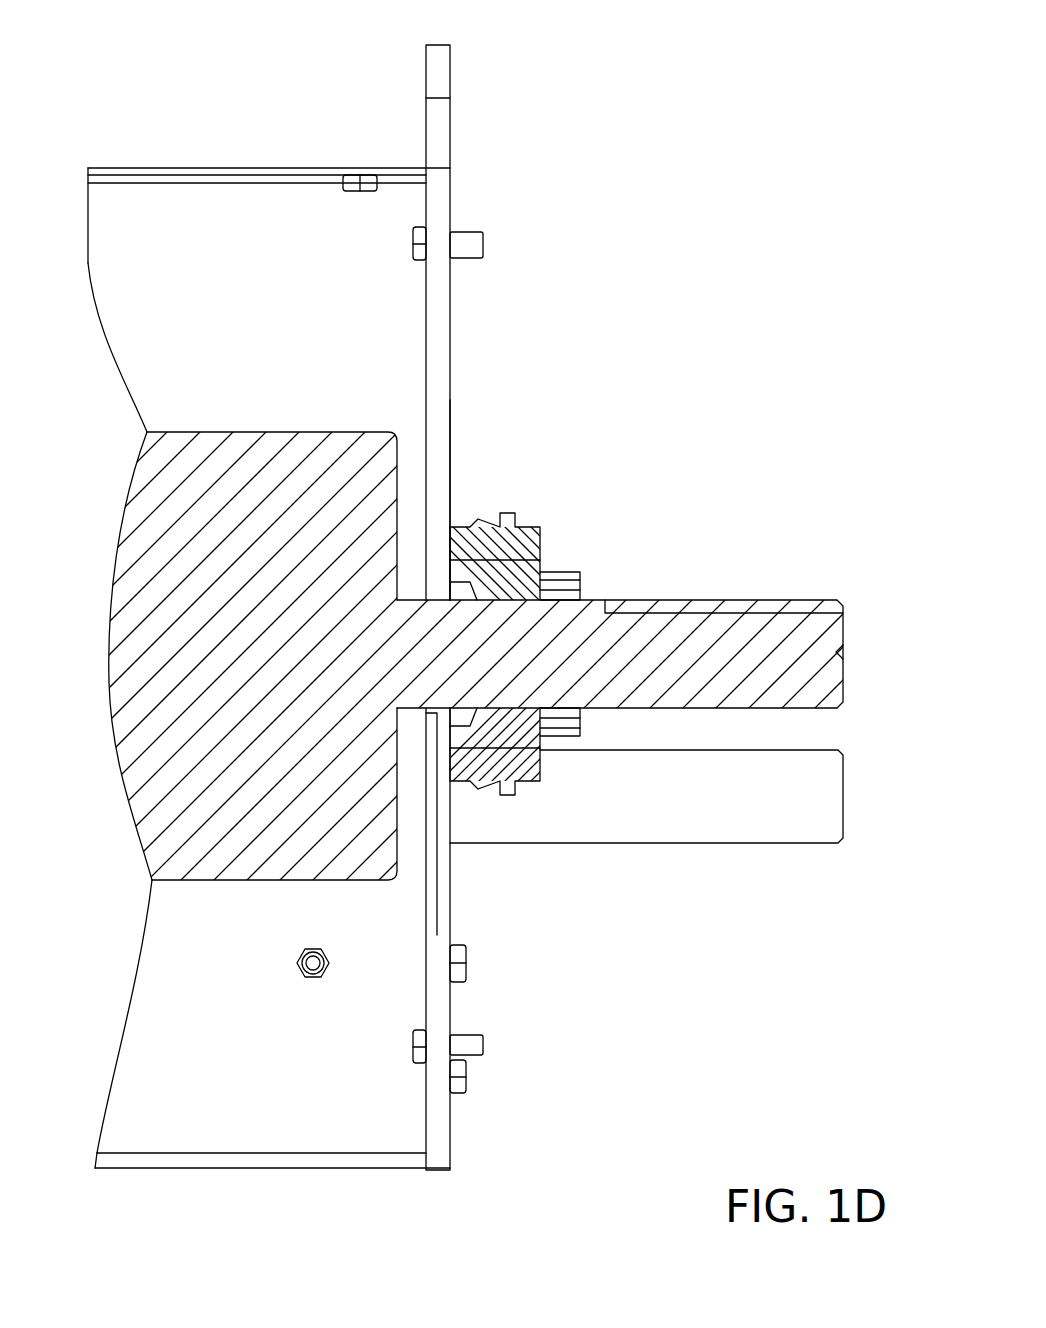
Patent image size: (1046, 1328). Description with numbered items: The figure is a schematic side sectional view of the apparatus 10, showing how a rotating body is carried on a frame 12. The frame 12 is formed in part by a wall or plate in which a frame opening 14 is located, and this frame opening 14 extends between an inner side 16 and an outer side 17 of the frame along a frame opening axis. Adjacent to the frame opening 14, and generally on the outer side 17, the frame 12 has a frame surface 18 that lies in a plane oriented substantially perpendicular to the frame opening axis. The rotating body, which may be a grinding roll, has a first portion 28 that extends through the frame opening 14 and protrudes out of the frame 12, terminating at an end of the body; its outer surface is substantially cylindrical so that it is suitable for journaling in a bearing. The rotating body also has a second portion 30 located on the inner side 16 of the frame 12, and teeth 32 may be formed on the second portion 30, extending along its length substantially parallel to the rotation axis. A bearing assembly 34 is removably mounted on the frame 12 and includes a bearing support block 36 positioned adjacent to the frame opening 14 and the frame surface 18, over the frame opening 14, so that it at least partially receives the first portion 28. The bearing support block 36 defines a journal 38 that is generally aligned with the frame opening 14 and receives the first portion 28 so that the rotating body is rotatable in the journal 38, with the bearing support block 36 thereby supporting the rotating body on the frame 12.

The apparatus 10 is at (705, 93).
The frame 12 is at (440, 300).
The frame opening 14 is at (437, 832).
The inner side 16 is at (360, 129).
The outer side 17 is at (486, 168).
The frame surface 18 is at (452, 450).
The first portion 28 is at (588, 600).
The second portion 30 is at (112, 727).
The teeth 32 is at (233, 428).
The bearing assembly 34 is at (542, 508).
The bearing support block 36 is at (540, 545).
The journal 38 is at (598, 680).